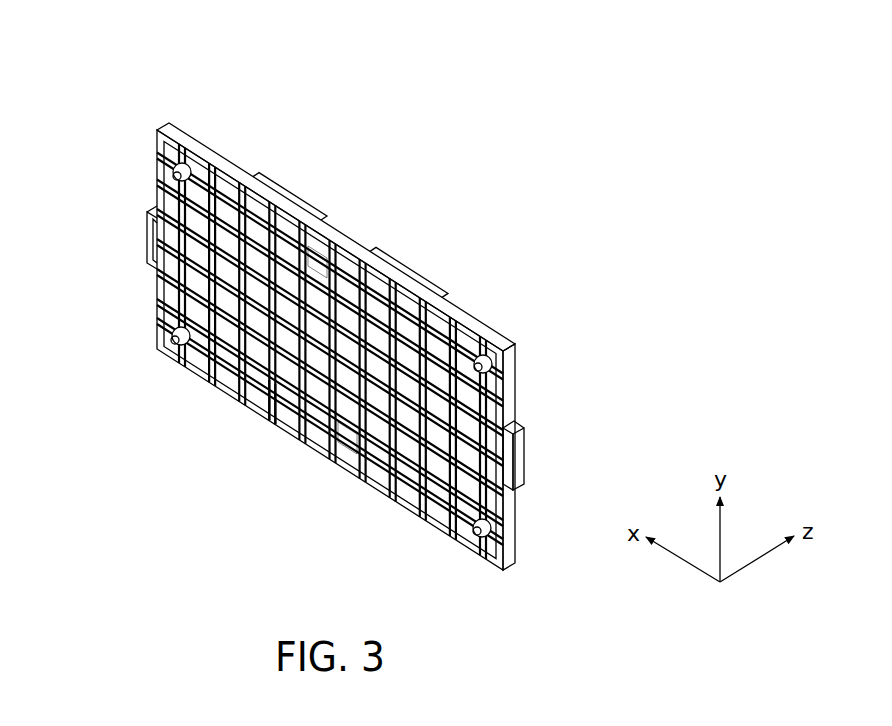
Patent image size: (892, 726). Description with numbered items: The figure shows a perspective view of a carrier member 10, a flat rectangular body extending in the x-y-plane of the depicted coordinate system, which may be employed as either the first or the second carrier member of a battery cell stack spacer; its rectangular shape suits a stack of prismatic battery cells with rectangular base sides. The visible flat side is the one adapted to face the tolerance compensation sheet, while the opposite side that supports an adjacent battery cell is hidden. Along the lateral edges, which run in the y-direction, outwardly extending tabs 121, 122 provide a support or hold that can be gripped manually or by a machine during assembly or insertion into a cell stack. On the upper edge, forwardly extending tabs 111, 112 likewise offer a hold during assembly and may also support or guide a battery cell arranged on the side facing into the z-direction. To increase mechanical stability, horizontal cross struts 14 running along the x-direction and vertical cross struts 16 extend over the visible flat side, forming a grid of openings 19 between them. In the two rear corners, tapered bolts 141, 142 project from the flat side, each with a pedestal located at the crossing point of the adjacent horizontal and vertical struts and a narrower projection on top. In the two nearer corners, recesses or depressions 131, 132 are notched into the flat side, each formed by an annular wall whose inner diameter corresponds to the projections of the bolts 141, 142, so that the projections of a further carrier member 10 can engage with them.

The carrier member 10 is at (339, 313).
The cross strut 14 is at (283, 412).
The cross strut 16 is at (366, 450).
The cell 19 is at (313, 265).
The tab 111 is at (416, 268).
The tab 112 is at (302, 188).
The tab 121 is at (526, 465).
The tab 122 is at (146, 237).
The recess or depression 131 is at (478, 540).
The recess or depression 132 is at (477, 354).
The bolt 141 is at (168, 356).
The bolt 142 is at (179, 166).